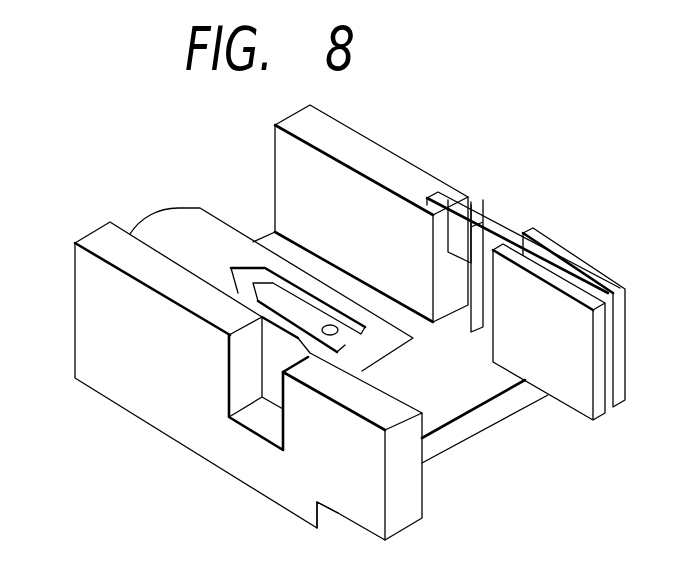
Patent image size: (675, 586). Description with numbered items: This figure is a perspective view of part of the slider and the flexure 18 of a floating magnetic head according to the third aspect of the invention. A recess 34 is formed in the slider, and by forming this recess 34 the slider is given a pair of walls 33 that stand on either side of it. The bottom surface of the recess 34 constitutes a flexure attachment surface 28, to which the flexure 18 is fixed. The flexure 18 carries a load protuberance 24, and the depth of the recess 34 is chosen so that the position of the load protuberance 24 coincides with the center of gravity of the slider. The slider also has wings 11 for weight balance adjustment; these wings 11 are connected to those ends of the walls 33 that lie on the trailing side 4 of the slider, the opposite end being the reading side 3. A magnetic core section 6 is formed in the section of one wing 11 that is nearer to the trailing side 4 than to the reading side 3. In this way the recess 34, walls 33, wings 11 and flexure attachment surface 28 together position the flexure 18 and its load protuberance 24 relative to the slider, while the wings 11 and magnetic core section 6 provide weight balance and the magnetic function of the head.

The reading side 3 is at (75, 315).
The trailing side 4 is at (325, 512).
The magnetic core section 6 is at (470, 213).
The wings 11 is at (590, 277).
The flexure 18 is at (182, 222).
The load protuberance 24 is at (332, 328).
The flexure attachment surface 28 is at (455, 403).
The walls 33 is at (345, 140).
The recess 34 is at (455, 327).